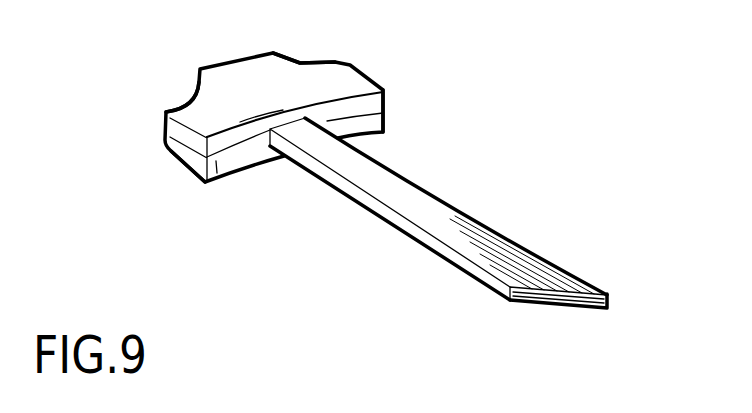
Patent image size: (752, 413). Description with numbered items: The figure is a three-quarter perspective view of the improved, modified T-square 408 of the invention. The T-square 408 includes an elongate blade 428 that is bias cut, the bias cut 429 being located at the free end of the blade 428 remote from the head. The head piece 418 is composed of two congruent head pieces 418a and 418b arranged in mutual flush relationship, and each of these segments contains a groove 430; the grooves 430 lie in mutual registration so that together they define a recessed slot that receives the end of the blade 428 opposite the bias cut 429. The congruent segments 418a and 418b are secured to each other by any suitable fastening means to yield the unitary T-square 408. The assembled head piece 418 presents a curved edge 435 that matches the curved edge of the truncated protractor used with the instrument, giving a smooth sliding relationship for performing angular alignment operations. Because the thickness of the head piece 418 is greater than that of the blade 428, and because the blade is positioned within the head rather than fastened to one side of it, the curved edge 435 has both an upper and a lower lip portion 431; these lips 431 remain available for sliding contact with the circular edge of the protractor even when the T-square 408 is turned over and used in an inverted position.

The modified T-square 408 is at (515, 225).
The head piece 418 is at (392, 70).
The congruent head piece 418a is at (187, 105).
The congruent head piece 418b is at (205, 182).
The elongate blade 428 is at (407, 200).
The bias cut 429 is at (563, 306).
The groove 430 is at (298, 105).
The lip portion 431 is at (285, 115).
The curved edge 435 is at (384, 123).